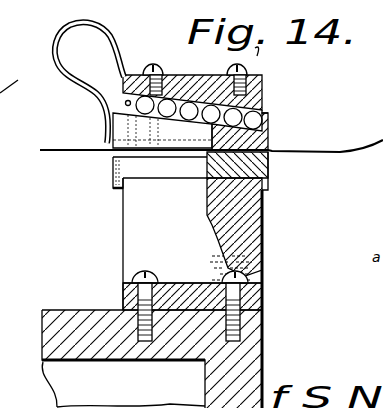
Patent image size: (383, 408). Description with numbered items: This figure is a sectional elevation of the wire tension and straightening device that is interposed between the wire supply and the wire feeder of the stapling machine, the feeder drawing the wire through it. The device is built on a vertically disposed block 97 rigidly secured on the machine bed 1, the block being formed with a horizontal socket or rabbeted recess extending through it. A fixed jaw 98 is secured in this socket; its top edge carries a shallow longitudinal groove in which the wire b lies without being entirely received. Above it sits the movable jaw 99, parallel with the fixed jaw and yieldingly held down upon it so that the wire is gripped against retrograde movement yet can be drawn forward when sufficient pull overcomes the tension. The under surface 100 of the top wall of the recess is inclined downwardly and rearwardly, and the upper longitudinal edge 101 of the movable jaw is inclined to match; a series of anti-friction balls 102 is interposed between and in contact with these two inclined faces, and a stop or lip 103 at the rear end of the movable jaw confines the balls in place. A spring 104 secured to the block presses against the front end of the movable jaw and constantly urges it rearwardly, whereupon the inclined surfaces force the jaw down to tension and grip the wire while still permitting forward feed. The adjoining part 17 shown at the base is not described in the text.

The frame wall 1 is at (50, 328).
The flange 17 is at (280, 366).
The block 97 is at (122, 218).
The fixed jaw 98 is at (109, 177).
The movable jaw 99 is at (124, 128).
The under surface of the top wall of the recess 100 is at (200, 110).
The upper longitudinal edge of the movable jaw 101 is at (197, 108).
The anti-friction balls 102 is at (263, 113).
The stop or lip 103 is at (286, 114).
The spring 104 is at (114, 72).
The shaft b is at (382, 122).